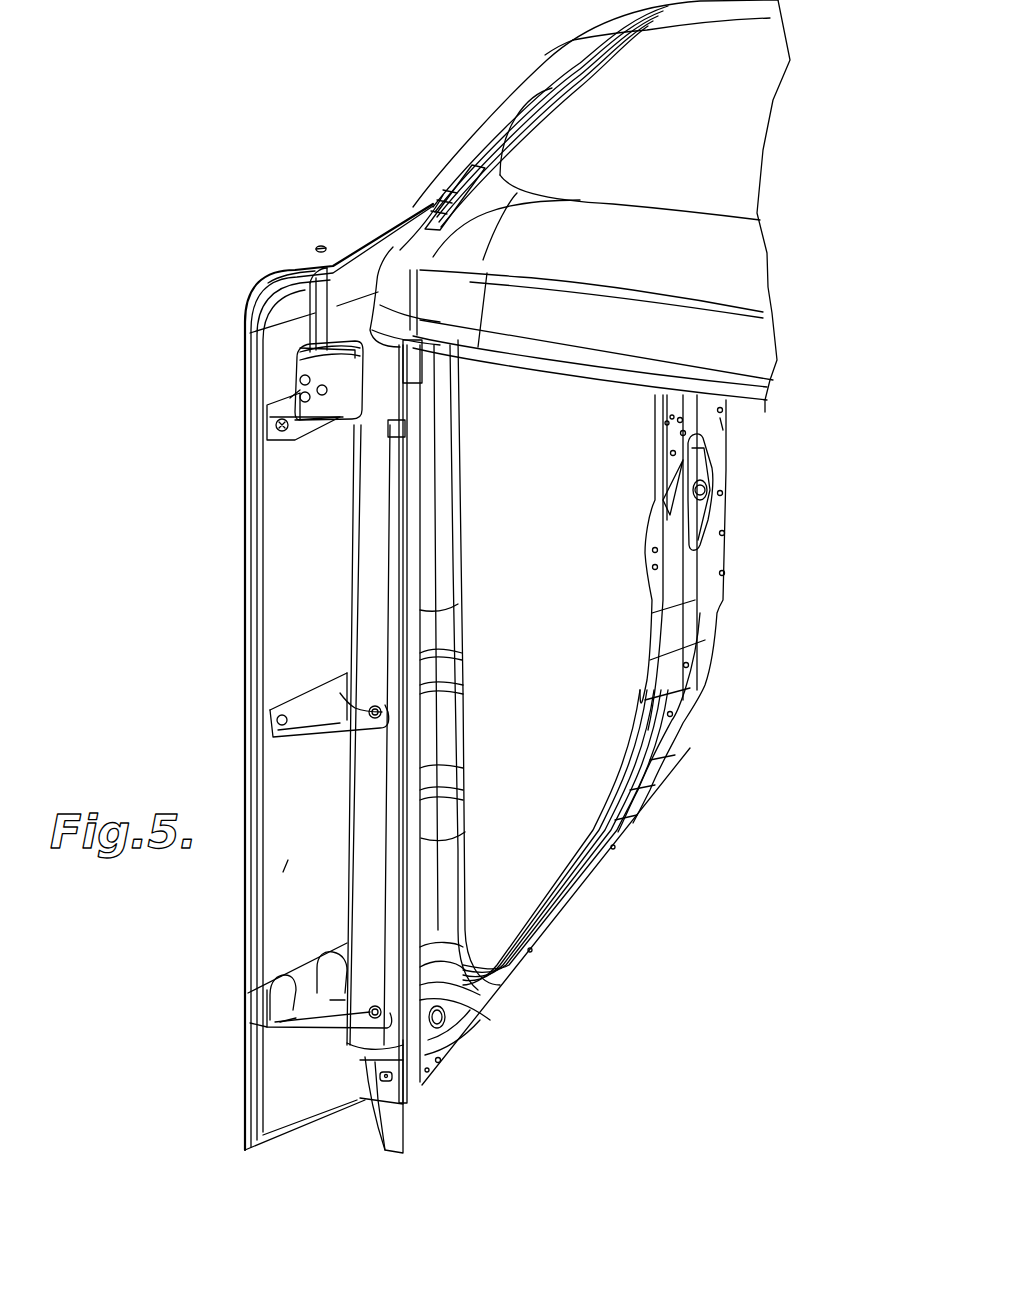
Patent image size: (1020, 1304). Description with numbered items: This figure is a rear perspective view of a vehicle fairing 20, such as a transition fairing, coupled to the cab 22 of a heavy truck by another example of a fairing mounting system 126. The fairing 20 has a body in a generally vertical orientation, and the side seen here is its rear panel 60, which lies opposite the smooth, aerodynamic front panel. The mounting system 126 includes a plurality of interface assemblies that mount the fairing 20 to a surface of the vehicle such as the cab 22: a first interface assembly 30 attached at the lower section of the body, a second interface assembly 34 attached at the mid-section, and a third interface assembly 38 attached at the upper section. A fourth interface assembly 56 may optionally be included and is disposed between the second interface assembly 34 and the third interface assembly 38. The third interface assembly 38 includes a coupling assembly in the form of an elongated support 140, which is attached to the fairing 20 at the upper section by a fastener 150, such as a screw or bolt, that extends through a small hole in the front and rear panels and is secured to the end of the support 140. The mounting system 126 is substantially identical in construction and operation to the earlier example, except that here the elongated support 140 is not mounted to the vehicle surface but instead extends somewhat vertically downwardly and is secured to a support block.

The fairing 20 is at (246, 588).
The cab 22 is at (398, 877).
The first interface assembly 30 is at (284, 966).
The second interface assembly 34 is at (294, 679).
The third interface assembly 38 is at (282, 294).
The fourth interface assembly 56 is at (326, 424).
The rear panel 60 is at (282, 873).
The mounting system 126 is at (277, 315).
The elongated support 140 is at (331, 283).
The fastener 150 is at (317, 247).